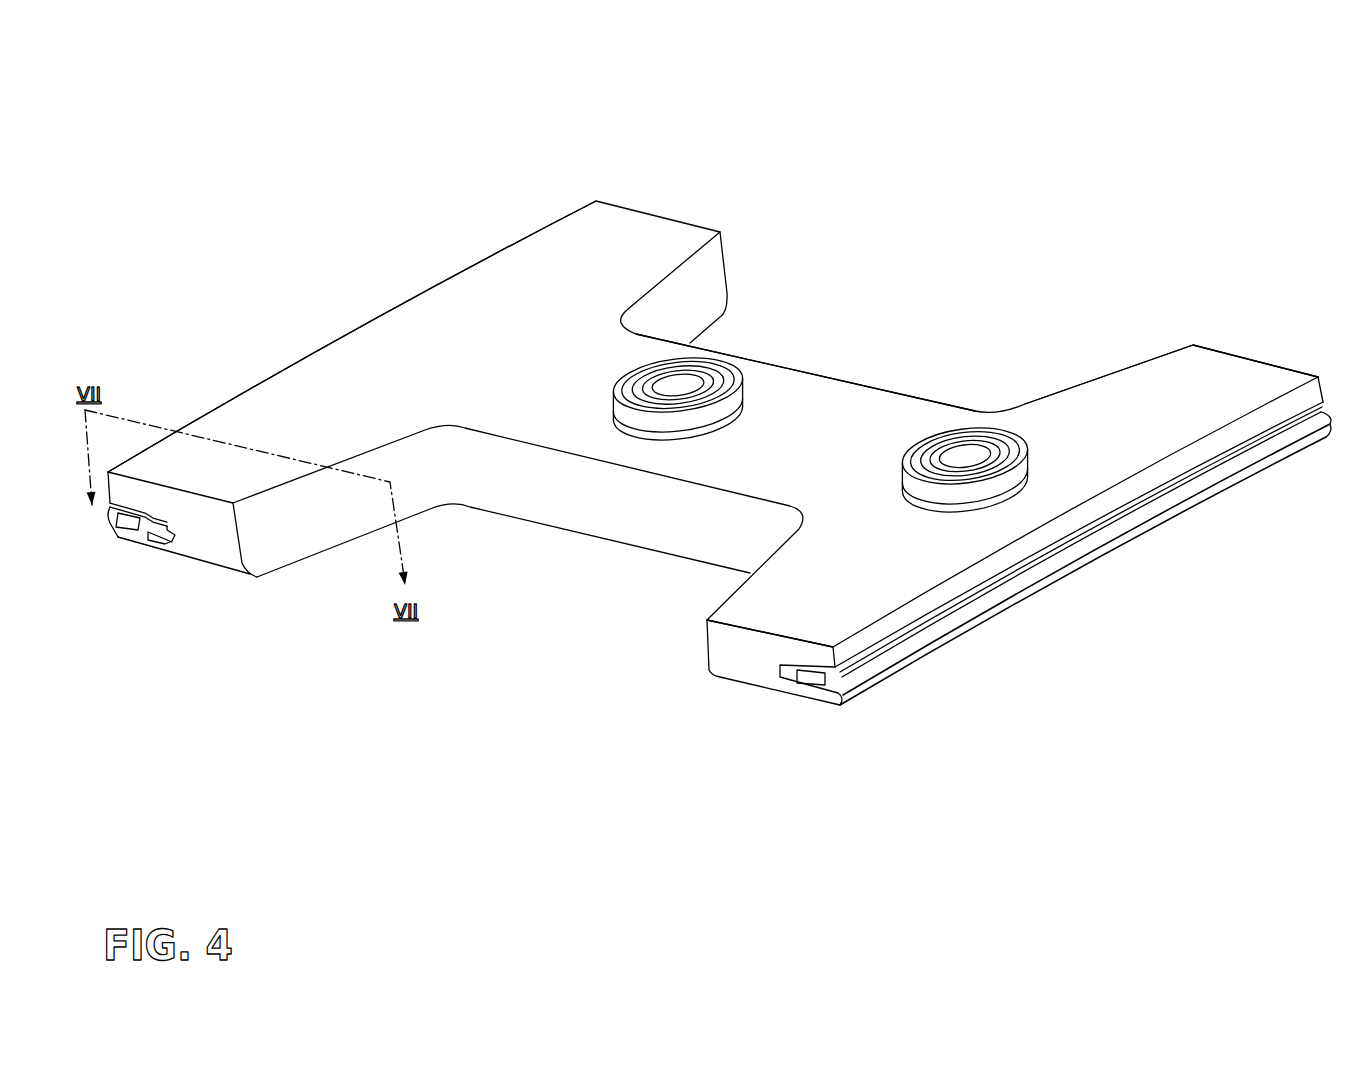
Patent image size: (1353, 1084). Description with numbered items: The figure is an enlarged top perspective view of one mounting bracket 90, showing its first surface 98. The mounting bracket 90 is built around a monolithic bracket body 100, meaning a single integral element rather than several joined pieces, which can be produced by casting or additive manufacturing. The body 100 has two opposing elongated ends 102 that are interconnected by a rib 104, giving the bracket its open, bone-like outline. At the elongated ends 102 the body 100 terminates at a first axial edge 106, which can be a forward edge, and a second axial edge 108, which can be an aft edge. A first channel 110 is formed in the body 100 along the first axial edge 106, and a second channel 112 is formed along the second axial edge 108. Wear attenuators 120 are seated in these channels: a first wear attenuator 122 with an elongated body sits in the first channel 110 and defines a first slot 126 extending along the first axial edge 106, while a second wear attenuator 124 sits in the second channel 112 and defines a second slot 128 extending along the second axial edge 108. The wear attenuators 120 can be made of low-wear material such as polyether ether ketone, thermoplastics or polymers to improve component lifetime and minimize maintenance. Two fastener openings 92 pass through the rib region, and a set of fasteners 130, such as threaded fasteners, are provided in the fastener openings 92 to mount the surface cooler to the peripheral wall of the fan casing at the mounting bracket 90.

The mounting bracket 90 is at (1032, 68).
The mounting bracket fastener openings 92 is at (735, 430).
The first surface 98 is at (873, 433).
The monolithic bracket body 100 is at (587, 347).
The elongated ends 102 is at (478, 316).
The rib 104 is at (603, 508).
The first axial edge 106 is at (1267, 407).
The second axial edge 108 is at (398, 297).
The first channel 110 is at (907, 623).
The second channel 112 is at (128, 498).
The wear attenuators 120 is at (172, 531).
The first wear attenuator 122 is at (828, 682).
The second wear attenuator 124 is at (130, 517).
The first slot 126 is at (870, 673).
The second slot 128 is at (113, 518).
The fasteners 130 is at (705, 367).